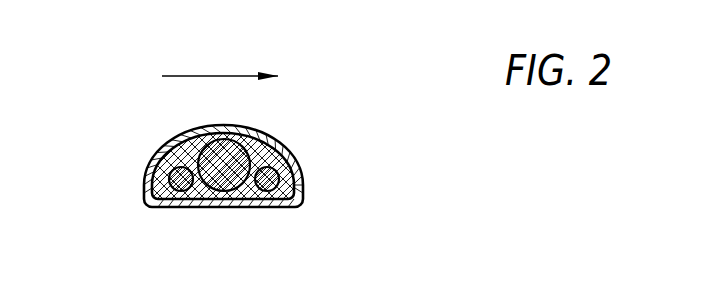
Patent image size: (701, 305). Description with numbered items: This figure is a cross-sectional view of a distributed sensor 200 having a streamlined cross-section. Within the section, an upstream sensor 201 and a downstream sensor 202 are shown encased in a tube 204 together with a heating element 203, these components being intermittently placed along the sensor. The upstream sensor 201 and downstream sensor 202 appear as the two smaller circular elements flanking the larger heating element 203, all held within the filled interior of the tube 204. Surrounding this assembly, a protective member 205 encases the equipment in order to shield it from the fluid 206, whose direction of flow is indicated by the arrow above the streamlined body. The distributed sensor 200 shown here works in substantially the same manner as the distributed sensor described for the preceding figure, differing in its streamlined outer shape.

The distributed sensor 200 is at (128, 145).
The upstream sensor 201 is at (147, 192).
The downstream sensor 202 is at (282, 200).
The heating element 203 is at (231, 193).
The tube 204 is at (283, 157).
The protective member 205 is at (272, 136).
The fluid 206 is at (212, 75).